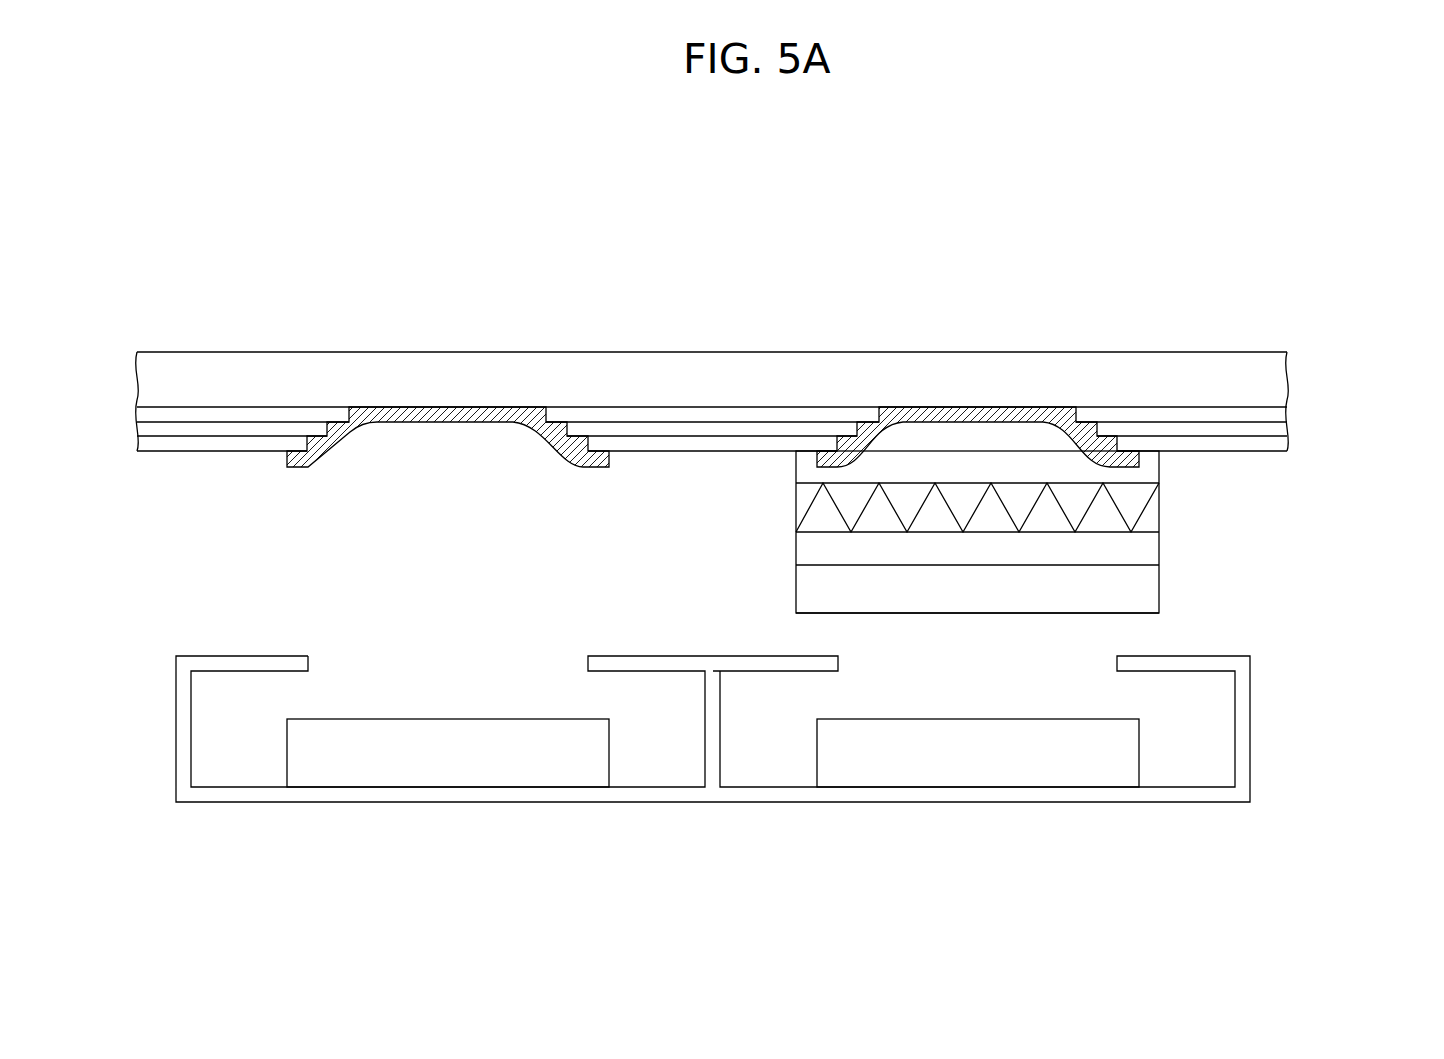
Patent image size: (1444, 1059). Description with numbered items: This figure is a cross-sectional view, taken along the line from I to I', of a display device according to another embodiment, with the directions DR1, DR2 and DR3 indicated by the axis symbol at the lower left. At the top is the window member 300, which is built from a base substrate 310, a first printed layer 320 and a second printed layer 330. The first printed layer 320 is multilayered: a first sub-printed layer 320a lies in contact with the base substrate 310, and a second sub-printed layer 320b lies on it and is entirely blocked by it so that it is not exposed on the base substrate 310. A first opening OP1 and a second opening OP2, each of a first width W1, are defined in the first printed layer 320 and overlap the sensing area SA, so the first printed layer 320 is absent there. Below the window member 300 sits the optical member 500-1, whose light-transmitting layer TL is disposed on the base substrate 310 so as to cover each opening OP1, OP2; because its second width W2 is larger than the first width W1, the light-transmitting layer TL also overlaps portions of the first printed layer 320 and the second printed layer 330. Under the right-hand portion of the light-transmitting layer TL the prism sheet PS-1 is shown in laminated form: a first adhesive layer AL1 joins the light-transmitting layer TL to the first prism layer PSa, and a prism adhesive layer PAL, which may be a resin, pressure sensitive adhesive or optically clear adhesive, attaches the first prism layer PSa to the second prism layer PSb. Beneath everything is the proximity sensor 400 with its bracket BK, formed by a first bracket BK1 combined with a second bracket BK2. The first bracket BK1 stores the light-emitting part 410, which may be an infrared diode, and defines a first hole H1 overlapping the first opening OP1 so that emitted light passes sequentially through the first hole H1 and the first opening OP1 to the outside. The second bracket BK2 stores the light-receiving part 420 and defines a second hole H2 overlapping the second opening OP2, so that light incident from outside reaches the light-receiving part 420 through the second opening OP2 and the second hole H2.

The window member 300 is at (789, 363).
The base substrate 310 is at (1277, 384).
The first printed layer 320 is at (790, 410).
The first sub-printed layer 320a is at (1283, 410).
The second sub-printed layer 320b is at (1283, 430).
The second printed layer 330 is at (1283, 441).
The light-transmitting layer TL is at (298, 456).
The first opening OP1 is at (958, 400).
The second opening OP2 is at (428, 400).
The first width W1 is at (546, 407).
The second width W2 is at (609, 451).
The sensing area SA is at (1288, 352).
The section line start I is at (116, 349).
The section line end I' is at (1308, 349).
The optical member 500-1 is at (1051, 532).
The first adhesive layer AL1 is at (1148, 474).
The prism sheet PS-1 is at (1009, 548).
The first prism layer PSa is at (1150, 509).
The prism adhesive layer PAL is at (810, 549).
The second prism layer PSb is at (1018, 598).
The proximity sensor 400 is at (769, 743).
The bracket BK is at (713, 764).
The first bracket BK1 is at (913, 793).
The second bracket BK2 is at (383, 793).
The light-emitting part 410 is at (981, 768).
The light-receiving part 420 is at (452, 768).
The first hole H1 is at (881, 653).
The second hole H2 is at (358, 650).
The first direction DR1 is at (116, 863).
The second direction DR2 is at (112, 879).
The third direction DR3 is at (109, 856).